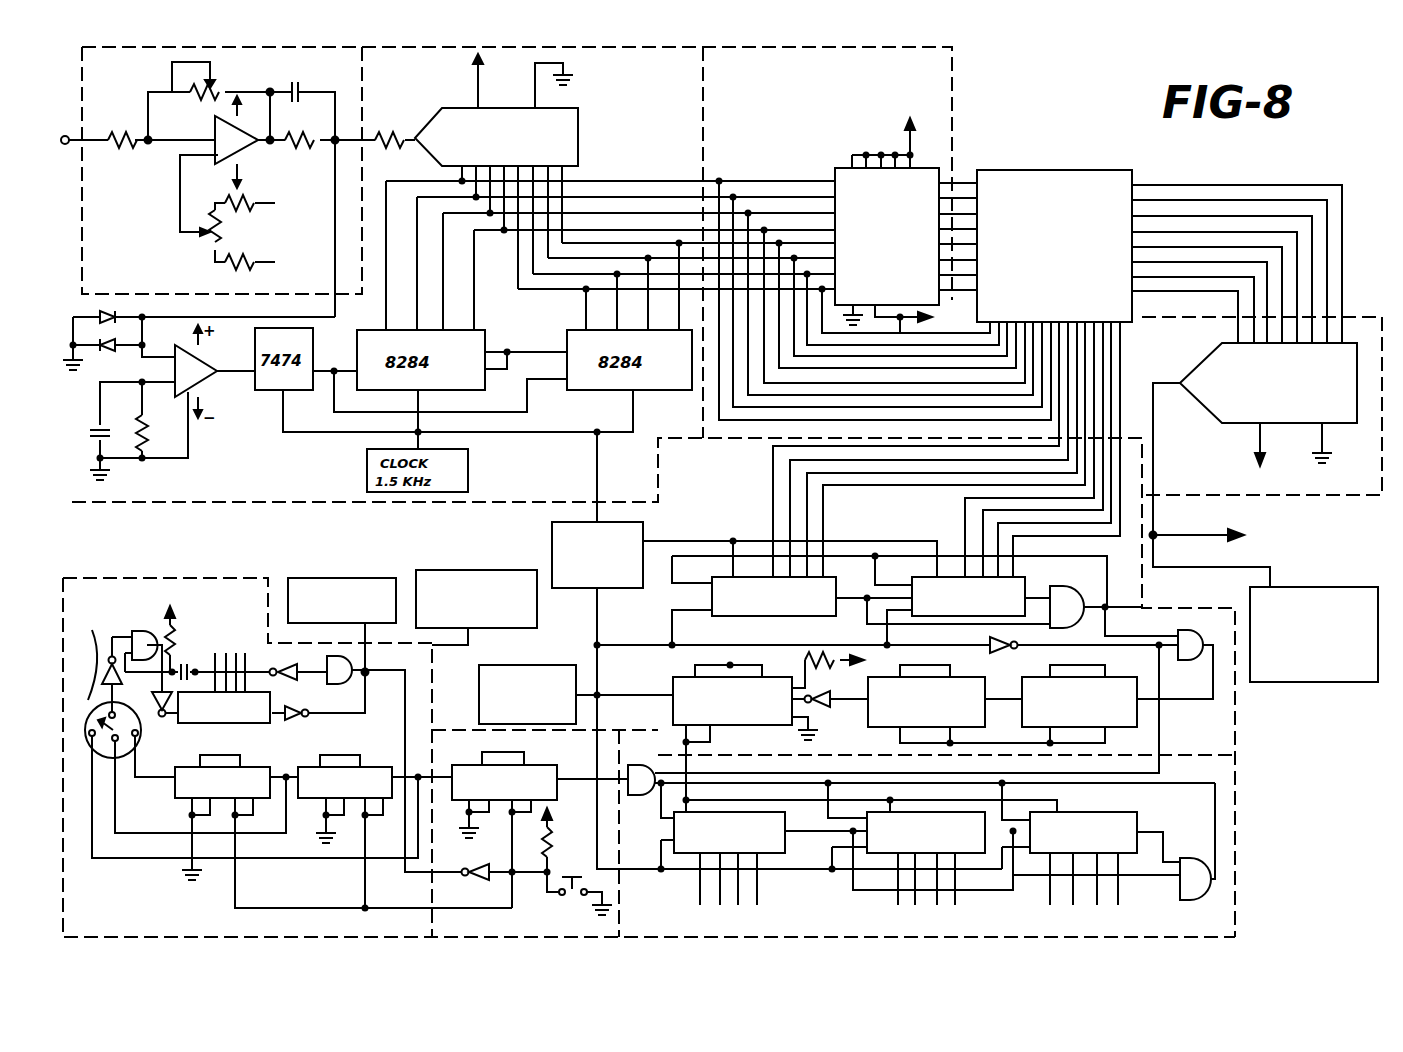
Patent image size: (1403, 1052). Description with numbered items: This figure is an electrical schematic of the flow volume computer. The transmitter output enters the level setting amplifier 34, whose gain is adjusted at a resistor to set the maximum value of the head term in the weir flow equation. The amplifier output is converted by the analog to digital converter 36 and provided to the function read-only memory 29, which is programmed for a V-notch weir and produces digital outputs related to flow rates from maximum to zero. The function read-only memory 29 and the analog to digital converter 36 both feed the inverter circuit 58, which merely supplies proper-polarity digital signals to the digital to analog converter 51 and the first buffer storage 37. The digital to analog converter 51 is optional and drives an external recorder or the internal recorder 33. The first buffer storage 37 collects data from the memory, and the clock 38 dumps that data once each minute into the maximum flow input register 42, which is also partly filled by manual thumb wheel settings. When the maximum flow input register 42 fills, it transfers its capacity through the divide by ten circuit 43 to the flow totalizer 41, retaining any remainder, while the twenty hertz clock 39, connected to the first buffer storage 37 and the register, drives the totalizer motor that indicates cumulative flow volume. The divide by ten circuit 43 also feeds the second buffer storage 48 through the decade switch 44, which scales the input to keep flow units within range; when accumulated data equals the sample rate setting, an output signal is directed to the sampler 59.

The level setting amplifier 34 is at (76, 111).
The analog to digital converter 36 is at (600, 97).
The function read-only memory 29 is at (962, 95).
The inverter circuit 58 is at (1082, 172).
The digital to analog converter 51 is at (1366, 314).
The internal recorder 33 is at (1330, 590).
The clock 38 is at (570, 588).
The first buffer storage 37 is at (1225, 693).
The 20 Hz clock 39 is at (525, 665).
The flow totalizer 41 is at (503, 570).
The sampler 59 is at (358, 578).
The second buffer storage 48 is at (290, 724).
The decade switch 44 is at (133, 722).
The divide by 10 circuit 43 is at (458, 724).
The maximum flow input register 42 is at (1240, 826).